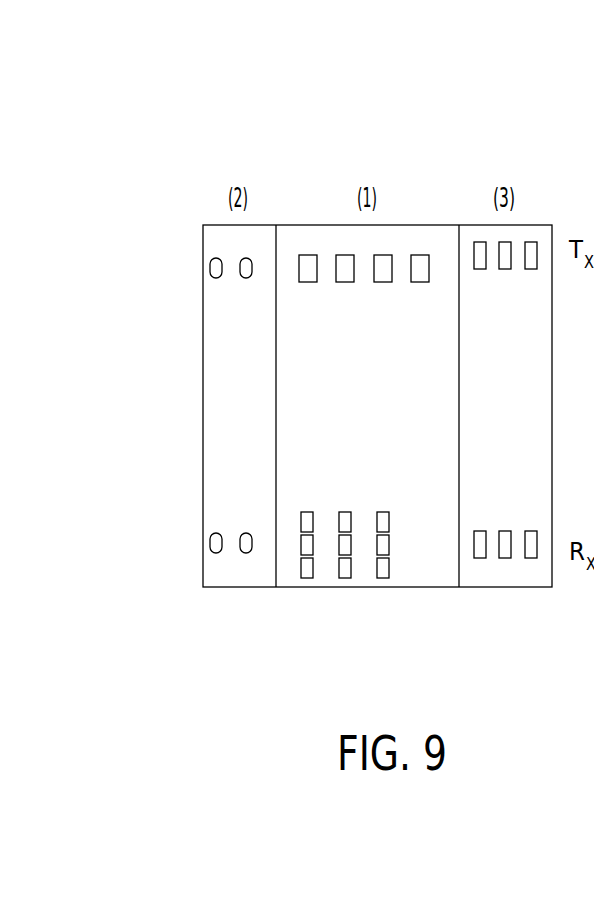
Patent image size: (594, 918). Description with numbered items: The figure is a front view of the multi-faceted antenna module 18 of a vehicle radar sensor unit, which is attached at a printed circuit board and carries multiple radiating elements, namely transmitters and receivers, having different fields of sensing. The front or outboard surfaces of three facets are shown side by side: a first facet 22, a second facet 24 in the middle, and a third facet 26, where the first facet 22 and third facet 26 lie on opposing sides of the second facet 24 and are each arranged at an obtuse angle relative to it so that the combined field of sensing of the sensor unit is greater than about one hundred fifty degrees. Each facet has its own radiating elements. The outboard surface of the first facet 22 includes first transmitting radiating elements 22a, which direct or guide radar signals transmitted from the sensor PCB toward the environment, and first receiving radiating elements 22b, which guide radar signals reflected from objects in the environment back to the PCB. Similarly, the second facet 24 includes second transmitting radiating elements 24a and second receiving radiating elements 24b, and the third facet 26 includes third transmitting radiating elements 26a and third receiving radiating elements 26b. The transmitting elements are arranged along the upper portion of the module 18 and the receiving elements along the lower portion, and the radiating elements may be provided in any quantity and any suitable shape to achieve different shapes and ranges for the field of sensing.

The antenna module 18 is at (203, 103).
The first facet 22 is at (195, 448).
The first transmitting radiating elements 22a is at (211, 268).
The first receiving radiating elements 22b is at (216, 554).
The second facet 24 is at (382, 382).
The second transmitting radiating elements 24a is at (383, 255).
The second receiving radiating elements 24b is at (382, 578).
The third facet 26 is at (505, 364).
The third transmitting radiating elements 26a is at (480, 242).
The third receiving radiating elements 26b is at (529, 558).